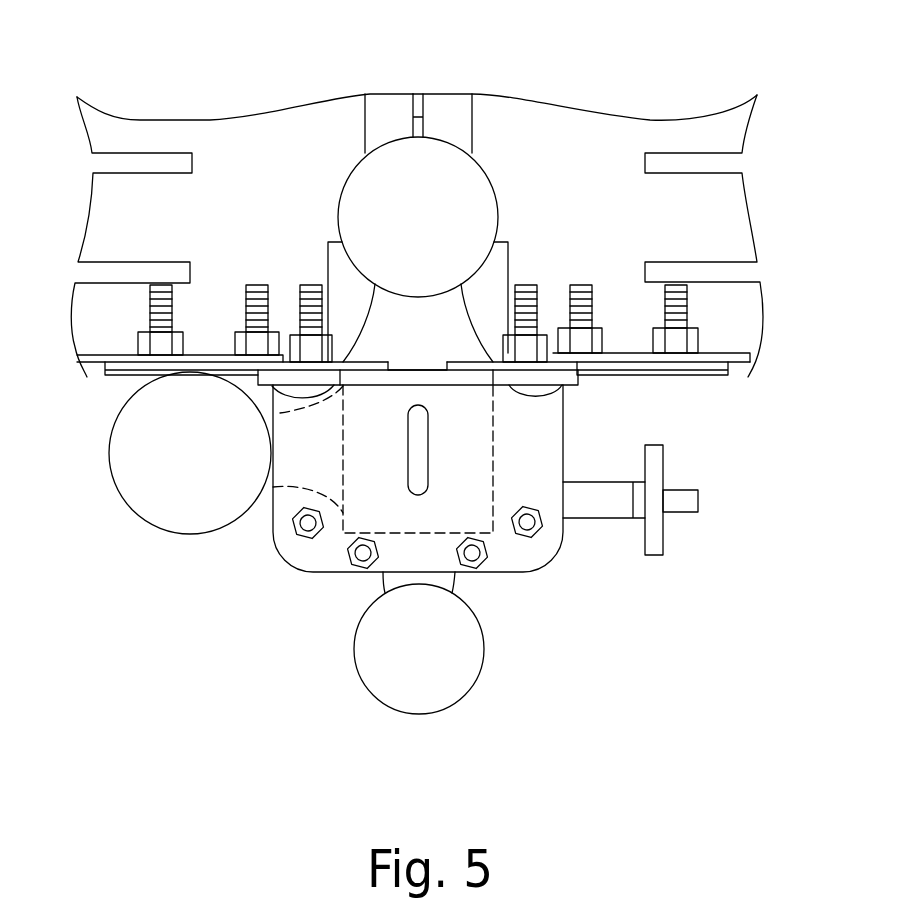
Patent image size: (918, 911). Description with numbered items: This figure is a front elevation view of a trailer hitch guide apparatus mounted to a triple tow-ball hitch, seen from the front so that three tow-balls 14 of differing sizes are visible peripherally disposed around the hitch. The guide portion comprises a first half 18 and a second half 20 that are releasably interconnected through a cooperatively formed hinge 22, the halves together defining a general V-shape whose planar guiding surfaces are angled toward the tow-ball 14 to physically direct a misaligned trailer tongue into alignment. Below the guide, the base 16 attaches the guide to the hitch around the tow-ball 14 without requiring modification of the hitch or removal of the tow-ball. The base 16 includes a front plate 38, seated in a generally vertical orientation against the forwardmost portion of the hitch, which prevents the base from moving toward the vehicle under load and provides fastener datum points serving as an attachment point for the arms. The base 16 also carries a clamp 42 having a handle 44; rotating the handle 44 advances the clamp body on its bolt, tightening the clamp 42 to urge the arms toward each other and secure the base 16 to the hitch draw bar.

The tow-ball 14 is at (468, 192).
The base 16 is at (508, 497).
The first half 18 is at (279, 157).
The second half 20 is at (562, 155).
The hinge 22 is at (382, 117).
The front plate 38 is at (298, 550).
The clamp 42 is at (592, 512).
The handle 44 is at (660, 535).